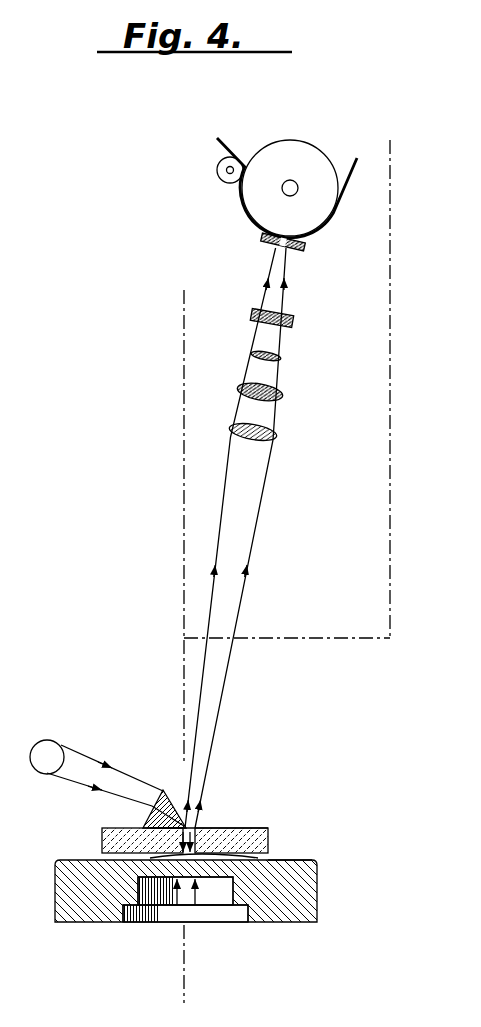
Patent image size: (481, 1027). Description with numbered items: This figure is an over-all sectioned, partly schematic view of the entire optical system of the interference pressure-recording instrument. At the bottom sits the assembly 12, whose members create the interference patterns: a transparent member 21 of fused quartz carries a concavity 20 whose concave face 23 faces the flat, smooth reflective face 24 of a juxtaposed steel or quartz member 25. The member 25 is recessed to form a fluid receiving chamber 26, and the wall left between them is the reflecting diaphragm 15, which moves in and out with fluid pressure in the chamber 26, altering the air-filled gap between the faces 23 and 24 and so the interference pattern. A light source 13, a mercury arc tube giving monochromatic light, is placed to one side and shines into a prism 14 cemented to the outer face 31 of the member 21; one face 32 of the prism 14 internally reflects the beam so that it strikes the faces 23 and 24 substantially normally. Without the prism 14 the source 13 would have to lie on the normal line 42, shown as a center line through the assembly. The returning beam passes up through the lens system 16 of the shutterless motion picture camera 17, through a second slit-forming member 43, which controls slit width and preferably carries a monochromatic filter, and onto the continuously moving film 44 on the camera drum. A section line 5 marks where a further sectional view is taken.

The section line 5- 5 is at (393, 157).
The assembly 12 is at (184, 860).
The source of light 13 is at (47, 747).
The prism 14 is at (150, 816).
The reflecting diaphragm 15 is at (198, 870).
The lens system 16 is at (298, 390).
The camera 17 is at (330, 205).
The concavity 20 is at (168, 880).
The transparent member 21 is at (102, 846).
The concave face 23 is at (230, 850).
The reflective face 24 is at (280, 860).
The member 25 is at (73, 892).
The fluid receiving chamber 26 is at (228, 912).
The outer face 31 is at (215, 828).
The face 32 is at (182, 792).
The normal line 42 is at (183, 333).
The second slit-forming member 43 is at (300, 248).
The film 44 is at (242, 117).